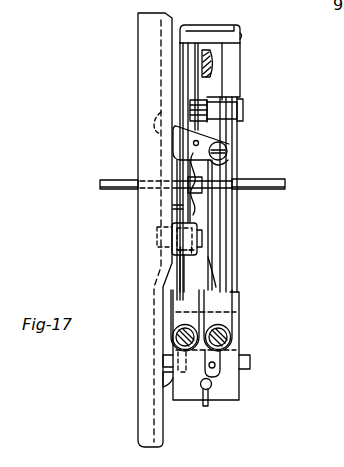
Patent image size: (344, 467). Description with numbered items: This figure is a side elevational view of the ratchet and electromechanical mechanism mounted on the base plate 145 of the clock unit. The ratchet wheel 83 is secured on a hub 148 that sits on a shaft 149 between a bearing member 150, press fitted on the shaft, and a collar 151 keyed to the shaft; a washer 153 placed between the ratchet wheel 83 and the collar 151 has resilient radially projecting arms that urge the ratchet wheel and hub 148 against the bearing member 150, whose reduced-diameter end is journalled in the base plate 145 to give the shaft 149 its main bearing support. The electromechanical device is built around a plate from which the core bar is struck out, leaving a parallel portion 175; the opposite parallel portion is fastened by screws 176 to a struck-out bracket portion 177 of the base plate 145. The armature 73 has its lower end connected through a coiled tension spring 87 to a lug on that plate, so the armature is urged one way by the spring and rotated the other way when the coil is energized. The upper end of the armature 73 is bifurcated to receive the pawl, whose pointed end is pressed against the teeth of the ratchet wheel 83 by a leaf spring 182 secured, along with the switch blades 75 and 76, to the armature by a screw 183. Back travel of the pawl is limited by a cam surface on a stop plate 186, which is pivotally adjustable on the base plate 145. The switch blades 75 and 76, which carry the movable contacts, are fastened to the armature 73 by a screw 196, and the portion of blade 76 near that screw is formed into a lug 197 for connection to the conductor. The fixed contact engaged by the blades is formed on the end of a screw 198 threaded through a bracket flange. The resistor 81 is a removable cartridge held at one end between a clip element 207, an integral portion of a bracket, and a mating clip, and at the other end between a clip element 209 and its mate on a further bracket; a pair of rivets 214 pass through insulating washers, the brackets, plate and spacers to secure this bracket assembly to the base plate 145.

The base plate 145 is at (164, 438).
The clip element 209 is at (243, 38).
The resistor 81 is at (231, 72).
The rivets 214 is at (213, 112).
The clip element 207 is at (239, 112).
The screw 198 is at (229, 149).
The shaft 149 is at (279, 179).
The hub 148 is at (178, 165).
The bearing member 150 is at (174, 174).
The ratchet wheel 83 is at (186, 202).
The collar 151 is at (205, 188).
The washer 153 is at (194, 211).
The switch blade 75 is at (222, 223).
The switch blade 76 is at (232, 244).
The stop plate 186 is at (171, 222).
The leaf spring 182 is at (183, 272).
The armature 73 is at (241, 296).
The screw 183 is at (174, 333).
The screw 196 is at (231, 333).
The parallel portion 175 is at (251, 361).
The lug 197 is at (222, 372).
The spring 87 is at (206, 406).
The bracket portion 177 is at (163, 360).
The screws 176 is at (164, 380).